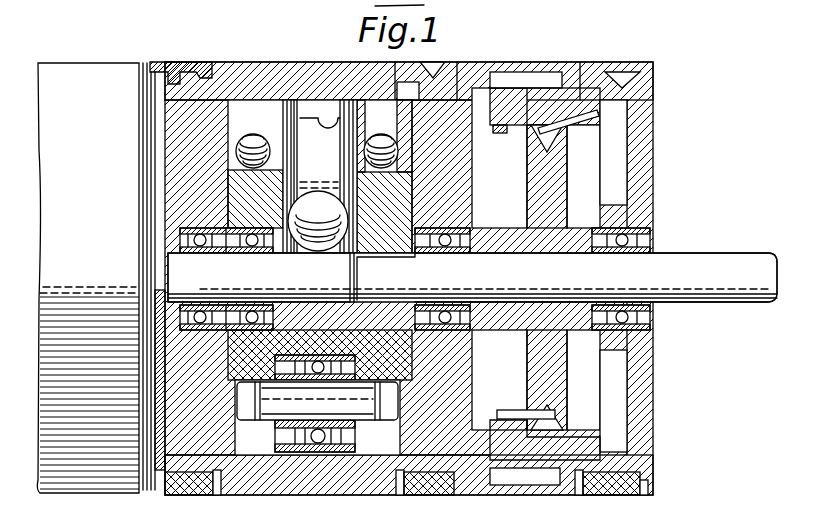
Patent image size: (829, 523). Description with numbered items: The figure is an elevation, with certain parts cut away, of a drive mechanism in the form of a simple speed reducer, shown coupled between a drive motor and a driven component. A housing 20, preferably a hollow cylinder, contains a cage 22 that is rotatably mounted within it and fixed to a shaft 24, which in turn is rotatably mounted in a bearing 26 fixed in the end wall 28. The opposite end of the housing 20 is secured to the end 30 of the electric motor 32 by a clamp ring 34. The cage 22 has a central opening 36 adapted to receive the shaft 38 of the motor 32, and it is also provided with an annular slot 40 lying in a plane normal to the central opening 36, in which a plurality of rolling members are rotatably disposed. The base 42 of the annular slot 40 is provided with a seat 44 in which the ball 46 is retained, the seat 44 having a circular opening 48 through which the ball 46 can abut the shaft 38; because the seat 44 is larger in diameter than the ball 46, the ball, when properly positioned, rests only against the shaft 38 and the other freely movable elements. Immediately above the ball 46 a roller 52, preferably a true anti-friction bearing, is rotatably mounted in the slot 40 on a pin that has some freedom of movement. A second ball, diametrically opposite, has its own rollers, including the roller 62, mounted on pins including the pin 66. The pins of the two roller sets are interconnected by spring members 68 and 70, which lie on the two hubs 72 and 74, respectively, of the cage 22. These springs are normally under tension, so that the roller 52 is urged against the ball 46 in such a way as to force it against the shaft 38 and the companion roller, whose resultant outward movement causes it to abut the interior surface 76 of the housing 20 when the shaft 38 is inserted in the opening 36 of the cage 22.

The housing 20 is at (250, 62).
The cage 22 is at (290, 94).
The shaft 24 is at (707, 253).
The bearing 26 is at (432, 228).
The end wall 28 is at (470, 372).
The end of the electric motor 30 is at (155, 203).
The electric motor 32 is at (89, 61).
The clamp ring 34 is at (170, 62).
The central opening 36 is at (300, 297).
The shaft of the motor 38 is at (250, 275).
The annular slot 40 is at (325, 116).
The base of the annular slot 42 is at (340, 347).
The seat 44 is at (346, 240).
The ball 46 is at (330, 219).
The circular opening 48 is at (329, 259).
The roller 52 is at (330, 165).
The roller 62 is at (334, 455).
The pin 66 is at (330, 403).
The spring member 68 is at (380, 135).
The spring member 70 is at (256, 135).
The hub 72 is at (402, 165).
The hub 74 is at (239, 164).
The interior surface 76 is at (298, 102).